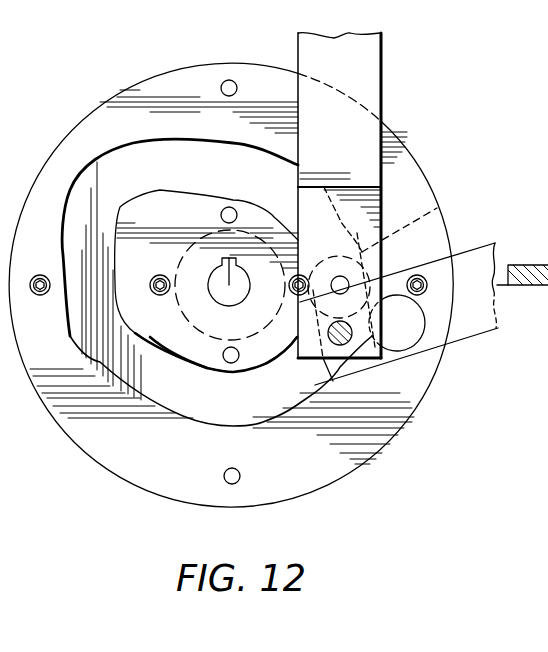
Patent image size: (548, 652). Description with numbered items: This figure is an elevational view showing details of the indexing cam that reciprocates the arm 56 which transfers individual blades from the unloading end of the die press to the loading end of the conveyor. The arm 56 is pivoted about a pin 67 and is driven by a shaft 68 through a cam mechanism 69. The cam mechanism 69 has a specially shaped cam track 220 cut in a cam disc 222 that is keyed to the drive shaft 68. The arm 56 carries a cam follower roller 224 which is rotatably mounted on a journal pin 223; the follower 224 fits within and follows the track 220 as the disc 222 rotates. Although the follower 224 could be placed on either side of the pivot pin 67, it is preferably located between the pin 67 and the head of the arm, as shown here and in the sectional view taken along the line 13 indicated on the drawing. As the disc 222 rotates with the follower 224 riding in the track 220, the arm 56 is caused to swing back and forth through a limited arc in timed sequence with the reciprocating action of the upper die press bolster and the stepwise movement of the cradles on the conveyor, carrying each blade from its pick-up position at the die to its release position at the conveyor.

The section line 13- 13 is at (341, 275).
The arm 56 is at (366, 63).
The pivot pin 67 is at (354, 339).
The drive shaft 68 is at (220, 288).
The cam mechanism 69 is at (396, 93).
The cam track 220 is at (240, 406).
The cam disc 222 is at (248, 486).
The journal pin 223 is at (343, 264).
The cam follower roller 224 is at (437, 208).